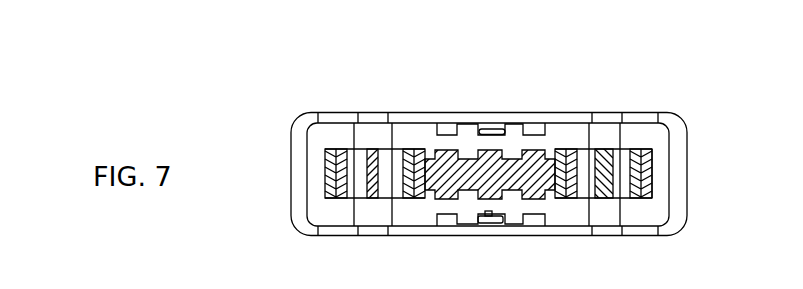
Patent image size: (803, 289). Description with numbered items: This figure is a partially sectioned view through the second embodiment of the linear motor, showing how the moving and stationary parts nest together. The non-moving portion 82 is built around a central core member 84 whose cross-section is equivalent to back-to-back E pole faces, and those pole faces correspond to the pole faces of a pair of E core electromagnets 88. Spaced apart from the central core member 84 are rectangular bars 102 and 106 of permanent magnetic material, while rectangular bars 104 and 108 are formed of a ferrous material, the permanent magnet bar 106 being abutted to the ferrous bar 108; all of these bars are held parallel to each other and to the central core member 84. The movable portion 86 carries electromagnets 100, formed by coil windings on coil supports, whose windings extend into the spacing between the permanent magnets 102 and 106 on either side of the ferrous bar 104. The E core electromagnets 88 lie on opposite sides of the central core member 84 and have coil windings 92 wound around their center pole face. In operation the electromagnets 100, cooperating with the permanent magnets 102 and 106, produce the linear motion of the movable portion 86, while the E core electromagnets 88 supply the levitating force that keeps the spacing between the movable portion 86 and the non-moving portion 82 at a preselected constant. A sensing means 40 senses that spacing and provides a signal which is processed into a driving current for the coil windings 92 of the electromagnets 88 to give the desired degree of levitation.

The movable portion 86 is at (328, 96).
The non-moving portion 82 is at (422, 134).
The central core member 84 is at (543, 183).
The E core electromagnets 88 is at (453, 112).
The coil windings 92 is at (486, 133).
The electromagnets 100 is at (352, 132).
The rectangular bar of permanent magnetic material 102 is at (577, 151).
The rectangular bar of ferrous material 104 is at (604, 151).
The rectangular bar of permanent magnetic material 106 is at (640, 183).
The rectangular bar of ferrous material 108 is at (653, 160).
The sensing means 40 is at (476, 218).